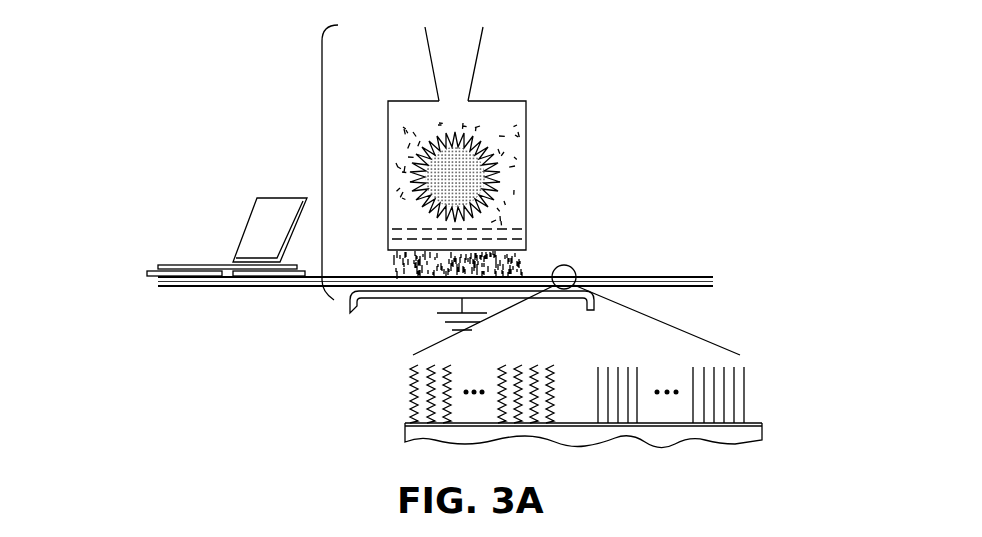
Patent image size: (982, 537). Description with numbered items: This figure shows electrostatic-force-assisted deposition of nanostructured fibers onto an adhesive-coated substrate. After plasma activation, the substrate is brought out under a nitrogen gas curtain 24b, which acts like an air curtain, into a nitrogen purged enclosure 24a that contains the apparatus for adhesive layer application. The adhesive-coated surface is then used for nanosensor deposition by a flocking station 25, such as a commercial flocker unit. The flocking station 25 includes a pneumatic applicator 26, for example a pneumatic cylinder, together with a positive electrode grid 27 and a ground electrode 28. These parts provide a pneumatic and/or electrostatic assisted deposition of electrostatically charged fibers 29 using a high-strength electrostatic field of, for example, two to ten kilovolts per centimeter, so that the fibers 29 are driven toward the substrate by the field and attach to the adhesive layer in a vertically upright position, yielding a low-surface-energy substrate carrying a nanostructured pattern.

The nitrogen purged enclosure 24a is at (165, 263).
The nitrogen gas curtain 24b is at (250, 218).
The flocking station 25 is at (322, 163).
The pneumatic applicator 26 is at (527, 130).
The positive electrode grid 27 is at (518, 235).
The ground electrode 28 is at (375, 300).
The electrostatically charged fibers 29 is at (745, 376).